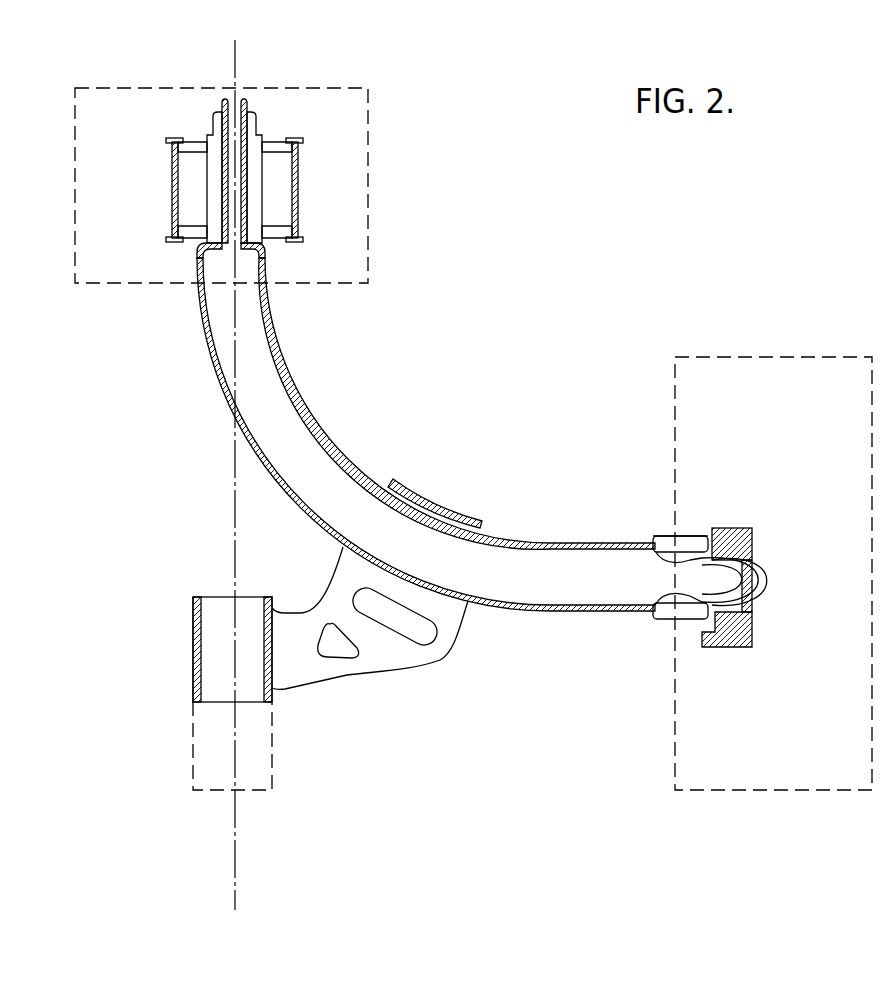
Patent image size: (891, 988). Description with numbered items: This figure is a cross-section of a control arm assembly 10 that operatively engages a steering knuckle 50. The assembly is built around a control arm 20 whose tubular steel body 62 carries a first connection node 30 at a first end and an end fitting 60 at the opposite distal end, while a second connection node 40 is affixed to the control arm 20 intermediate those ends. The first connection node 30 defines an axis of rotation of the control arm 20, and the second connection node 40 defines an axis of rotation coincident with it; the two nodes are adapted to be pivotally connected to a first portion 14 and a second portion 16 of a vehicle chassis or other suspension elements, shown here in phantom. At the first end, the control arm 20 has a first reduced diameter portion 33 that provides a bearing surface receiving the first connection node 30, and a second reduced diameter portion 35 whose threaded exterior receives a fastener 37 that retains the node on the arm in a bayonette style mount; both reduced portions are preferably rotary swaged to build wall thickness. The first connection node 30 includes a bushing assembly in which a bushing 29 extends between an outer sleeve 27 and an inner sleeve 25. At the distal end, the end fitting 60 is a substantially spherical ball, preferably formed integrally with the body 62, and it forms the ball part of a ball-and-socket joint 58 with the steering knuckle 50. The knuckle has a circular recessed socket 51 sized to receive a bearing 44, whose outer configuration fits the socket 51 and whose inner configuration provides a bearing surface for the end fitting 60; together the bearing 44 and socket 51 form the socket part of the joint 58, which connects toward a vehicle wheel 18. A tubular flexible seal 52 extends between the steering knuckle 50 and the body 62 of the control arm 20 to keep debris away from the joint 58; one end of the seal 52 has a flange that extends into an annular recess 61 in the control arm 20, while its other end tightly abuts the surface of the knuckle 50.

The control arm assembly 10 is at (518, 613).
The first portion of vehicle chassis 14 is at (104, 283).
The second portion of vehicle chassis 16 is at (193, 745).
The vehicle wheel 18 is at (675, 742).
The control arm 20 is at (247, 444).
The inner sleeve 25 is at (210, 140).
The outer sleeve 27 is at (171, 165).
The bushing 29 is at (196, 200).
The first connection node 30 is at (290, 165).
The first reduced diameter portion 33 is at (250, 202).
The second reduced diameter portion 35 is at (220, 101).
The fastener 37 is at (248, 104).
The second connection node 40 is at (343, 672).
The bearing 44 is at (706, 529).
The steering knuckle 50 is at (752, 645).
The socket 51 is at (759, 583).
The flexible seal 52 is at (663, 621).
The ball-and-socket joint 58 is at (742, 529).
The end fitting 60 is at (730, 590).
The annular recess 61 is at (657, 603).
The tubular steel body 62 is at (382, 487).